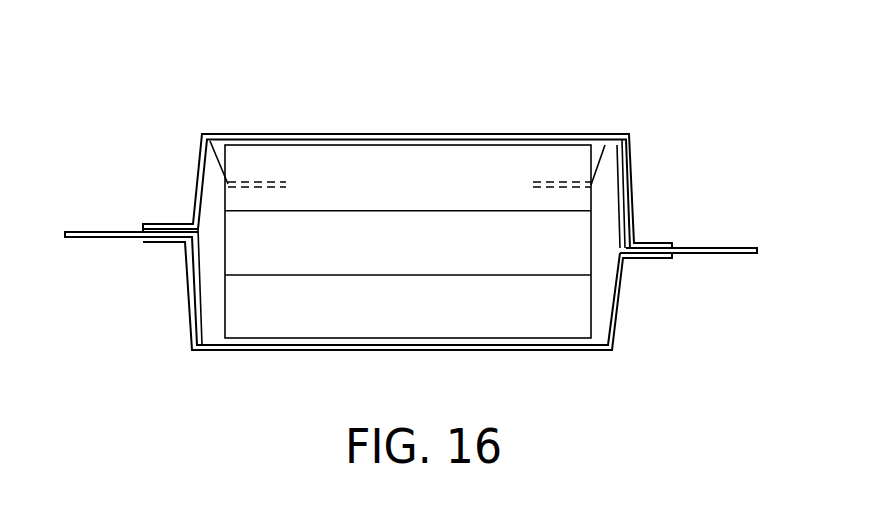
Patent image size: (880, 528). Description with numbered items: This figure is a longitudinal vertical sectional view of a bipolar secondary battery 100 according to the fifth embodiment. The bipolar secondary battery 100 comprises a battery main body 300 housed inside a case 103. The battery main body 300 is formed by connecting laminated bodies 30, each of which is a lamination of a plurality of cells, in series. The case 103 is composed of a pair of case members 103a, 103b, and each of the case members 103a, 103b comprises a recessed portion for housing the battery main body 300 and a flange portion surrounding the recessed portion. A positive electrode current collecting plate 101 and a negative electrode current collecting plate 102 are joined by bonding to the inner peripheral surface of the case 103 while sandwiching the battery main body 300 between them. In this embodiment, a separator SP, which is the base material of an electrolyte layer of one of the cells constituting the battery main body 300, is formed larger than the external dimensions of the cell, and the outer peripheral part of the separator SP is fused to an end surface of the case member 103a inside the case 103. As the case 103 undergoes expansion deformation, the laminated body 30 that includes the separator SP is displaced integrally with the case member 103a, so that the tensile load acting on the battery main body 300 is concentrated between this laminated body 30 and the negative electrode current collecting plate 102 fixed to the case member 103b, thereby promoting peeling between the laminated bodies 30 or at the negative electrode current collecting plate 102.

The bipolar secondary battery 100 is at (411, 199).
The laminated body 30 is at (262, 240).
The battery main body 300 is at (469, 209).
The case 103 is at (440, 213).
The case member 103a is at (633, 182).
The case member 103b is at (617, 340).
The positive electrode current collecting plate 101 is at (732, 248).
The negative electrode current collecting plate 102 is at (88, 231).
The separator SP is at (220, 166).